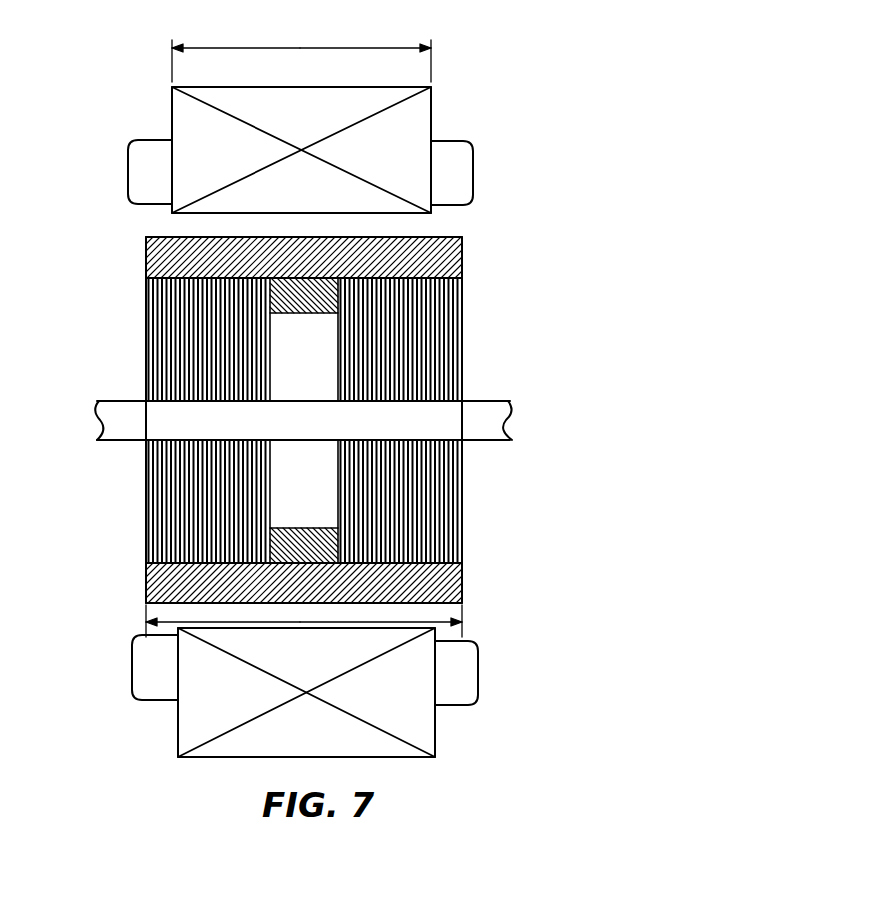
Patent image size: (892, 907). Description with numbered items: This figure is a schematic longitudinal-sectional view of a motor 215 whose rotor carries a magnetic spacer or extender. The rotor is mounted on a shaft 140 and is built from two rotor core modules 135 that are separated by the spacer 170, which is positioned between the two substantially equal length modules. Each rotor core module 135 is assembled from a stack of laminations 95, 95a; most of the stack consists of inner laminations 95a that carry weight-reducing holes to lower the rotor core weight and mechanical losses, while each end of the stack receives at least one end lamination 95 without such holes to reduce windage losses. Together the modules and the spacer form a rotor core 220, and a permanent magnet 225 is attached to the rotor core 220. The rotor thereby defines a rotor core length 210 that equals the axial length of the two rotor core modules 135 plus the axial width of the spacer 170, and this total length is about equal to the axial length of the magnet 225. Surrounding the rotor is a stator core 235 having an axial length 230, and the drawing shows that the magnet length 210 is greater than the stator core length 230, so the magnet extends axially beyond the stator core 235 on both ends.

The motor 215 is at (610, 103).
The axial length of a stator core 230 is at (300, 48).
The stator core 235 is at (418, 118).
The permanent magnet 225 is at (463, 240).
The rotor core 220 is at (468, 305).
The end lamination 95 is at (462, 372).
The inner lamination 95a is at (435, 520).
The rotor core module 135 is at (472, 342).
The spacer 170 is at (298, 527).
The shaft 140 is at (512, 425).
The rotor core length 210 is at (275, 618).